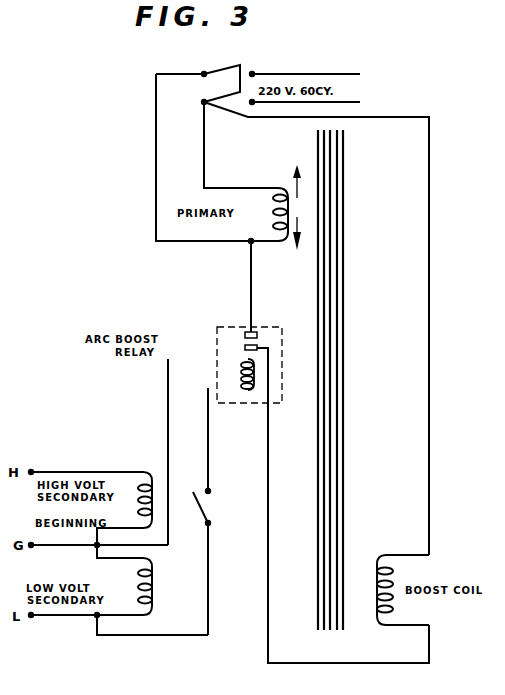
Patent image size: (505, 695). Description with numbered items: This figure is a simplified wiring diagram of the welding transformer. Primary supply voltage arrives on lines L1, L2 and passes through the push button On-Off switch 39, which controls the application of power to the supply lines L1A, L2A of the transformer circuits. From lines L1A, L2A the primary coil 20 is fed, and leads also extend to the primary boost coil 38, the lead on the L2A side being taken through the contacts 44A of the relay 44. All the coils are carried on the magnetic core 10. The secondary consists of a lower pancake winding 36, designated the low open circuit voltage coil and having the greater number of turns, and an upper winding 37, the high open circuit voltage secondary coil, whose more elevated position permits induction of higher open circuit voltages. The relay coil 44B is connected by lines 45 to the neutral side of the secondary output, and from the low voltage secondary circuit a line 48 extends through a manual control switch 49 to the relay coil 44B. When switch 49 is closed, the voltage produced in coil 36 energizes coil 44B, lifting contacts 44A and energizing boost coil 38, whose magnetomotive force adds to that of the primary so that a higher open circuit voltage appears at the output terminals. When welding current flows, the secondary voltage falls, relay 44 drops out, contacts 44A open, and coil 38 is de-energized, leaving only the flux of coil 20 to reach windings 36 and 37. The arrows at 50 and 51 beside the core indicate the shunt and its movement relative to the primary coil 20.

The core 10 is at (344, 219).
The primary coil 20 is at (270, 214).
The low open circuit voltage coil 36 is at (152, 586).
The high open circuit voltage secondary coil 37 is at (155, 478).
The primary boost coil 38 is at (285, 243).
The push button On-Off switch 39 is at (231, 66).
The relay 44 is at (232, 342).
The contacts 44A is at (262, 338).
The relay coil 44B is at (256, 378).
The lines 45 is at (167, 422).
The line 48 is at (208, 587).
The manual control switch 49 is at (205, 512).
The magnetic shunt 50 is at (295, 233).
The shunt movement direction 51 is at (288, 182).
The supply line L1 is at (358, 73).
The supply line L2 is at (358, 102).
The supply line of the transformer circuits L1A is at (170, 74).
The supply line of the transformer circuits L2A is at (204, 132).